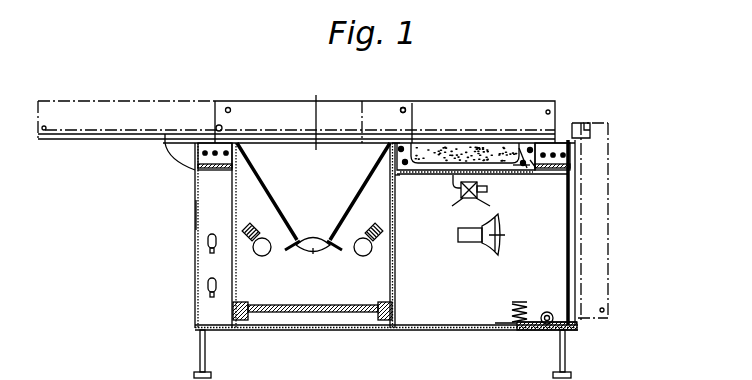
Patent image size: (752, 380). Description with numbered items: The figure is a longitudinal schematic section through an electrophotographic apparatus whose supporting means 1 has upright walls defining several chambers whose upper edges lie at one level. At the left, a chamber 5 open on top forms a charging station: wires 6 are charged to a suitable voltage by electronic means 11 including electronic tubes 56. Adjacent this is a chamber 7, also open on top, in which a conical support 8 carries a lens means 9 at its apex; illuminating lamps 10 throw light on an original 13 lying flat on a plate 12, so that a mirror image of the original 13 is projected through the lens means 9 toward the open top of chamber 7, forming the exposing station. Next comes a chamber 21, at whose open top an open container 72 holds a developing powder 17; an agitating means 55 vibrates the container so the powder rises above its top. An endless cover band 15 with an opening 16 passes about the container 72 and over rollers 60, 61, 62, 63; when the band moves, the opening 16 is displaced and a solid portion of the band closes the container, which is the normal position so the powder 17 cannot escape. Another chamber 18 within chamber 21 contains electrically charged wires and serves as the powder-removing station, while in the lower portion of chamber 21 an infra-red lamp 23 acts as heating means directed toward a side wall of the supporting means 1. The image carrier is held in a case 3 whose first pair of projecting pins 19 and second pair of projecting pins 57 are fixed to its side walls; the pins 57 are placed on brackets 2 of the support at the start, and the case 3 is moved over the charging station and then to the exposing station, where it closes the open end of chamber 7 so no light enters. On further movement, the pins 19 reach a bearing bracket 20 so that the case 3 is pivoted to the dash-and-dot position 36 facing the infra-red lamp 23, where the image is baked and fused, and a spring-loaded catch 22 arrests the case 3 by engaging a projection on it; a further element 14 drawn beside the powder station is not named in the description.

The supporting means 1 is at (193, 310).
The brackets 2 is at (185, 150).
The case 3 is at (280, 116).
The chamber 5 is at (196, 173).
The wires 6 is at (229, 152).
The chamber 7 is at (320, 109).
The conical support 8 is at (268, 194).
The lens means 9 is at (312, 251).
The illuminating lamps 10 is at (262, 256).
The electronic means 11 is at (205, 215).
The plate 12 is at (353, 316).
The original 13 is at (311, 316).
The mounting flange 14 is at (530, 168).
The cover band 15 is at (518, 176).
The opening 16 is at (500, 146).
The developing powder 17 is at (463, 150).
The chamber 18 is at (545, 150).
The projecting pins 19 is at (219, 125).
The bearing bracket 20 is at (588, 132).
The chamber 21 is at (470, 288).
The spring-loaded catch 22 is at (577, 327).
The infra-red lamp 23 is at (501, 236).
The door 36 is at (608, 262).
The agitating means 55 is at (460, 192).
The electronic tubes 56 is at (206, 243).
The projecting pins 57 is at (404, 107).
The roller 60 is at (398, 142).
The roller 61 is at (521, 152).
The roller 62 is at (577, 160).
The roller 63 is at (402, 180).
The open container 72 is at (437, 148).